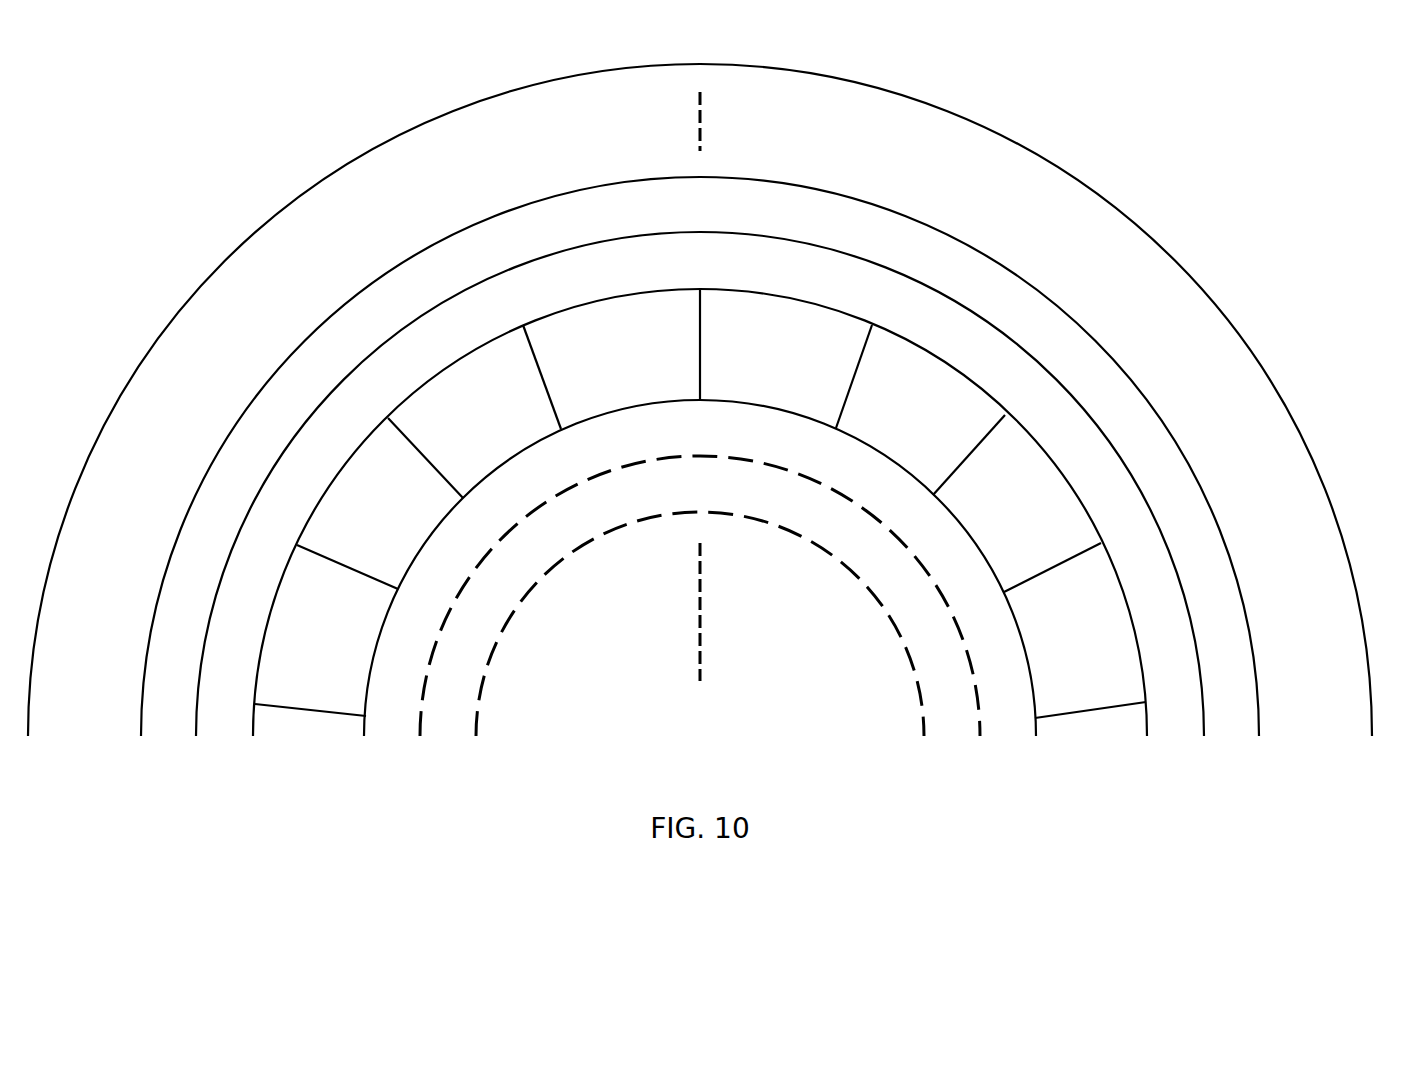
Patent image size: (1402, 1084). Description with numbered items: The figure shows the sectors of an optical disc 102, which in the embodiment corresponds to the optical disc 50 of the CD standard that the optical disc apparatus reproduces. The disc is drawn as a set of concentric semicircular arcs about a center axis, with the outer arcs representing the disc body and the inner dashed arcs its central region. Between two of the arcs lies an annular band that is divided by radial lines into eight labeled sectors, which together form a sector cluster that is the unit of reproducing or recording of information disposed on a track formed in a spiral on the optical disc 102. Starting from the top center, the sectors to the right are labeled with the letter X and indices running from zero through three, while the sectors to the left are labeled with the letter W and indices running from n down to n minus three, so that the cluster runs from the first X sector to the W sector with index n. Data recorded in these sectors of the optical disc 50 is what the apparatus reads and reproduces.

The optical disc 102 is at (700, 400).
The optical disc 50 is at (1083, 180).